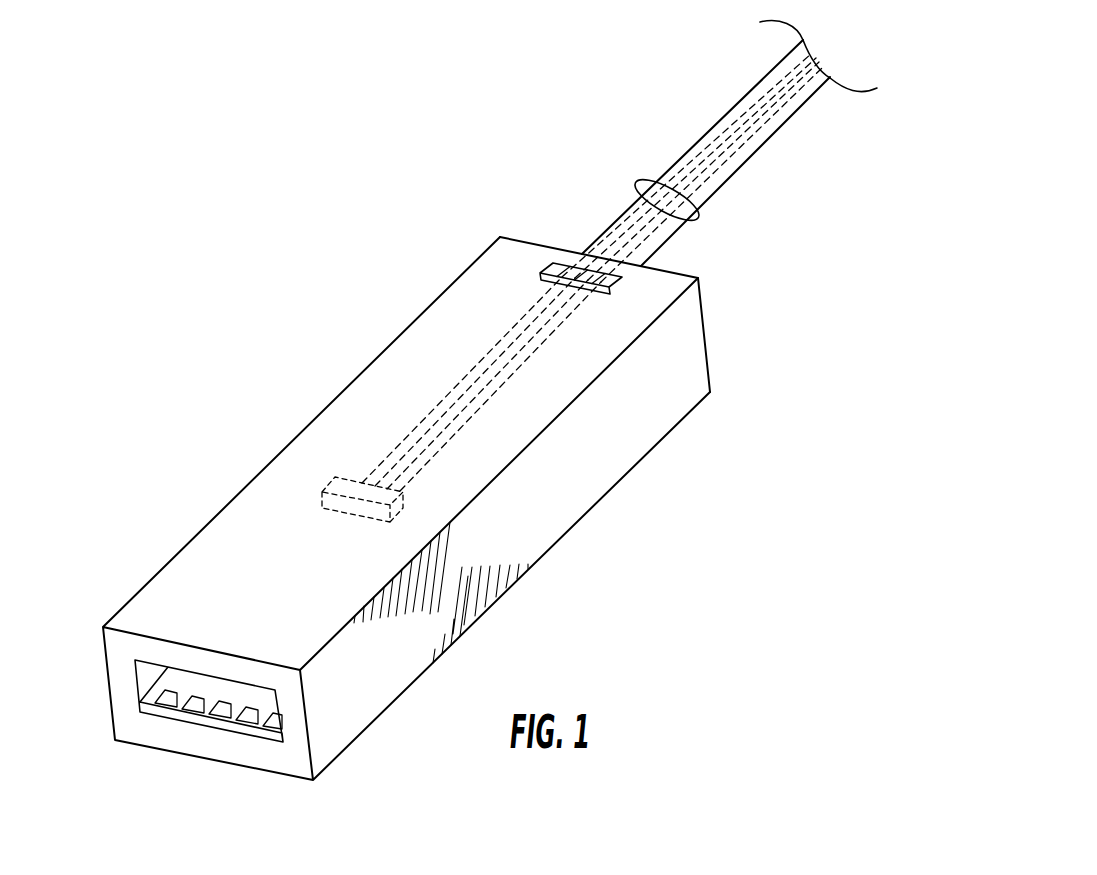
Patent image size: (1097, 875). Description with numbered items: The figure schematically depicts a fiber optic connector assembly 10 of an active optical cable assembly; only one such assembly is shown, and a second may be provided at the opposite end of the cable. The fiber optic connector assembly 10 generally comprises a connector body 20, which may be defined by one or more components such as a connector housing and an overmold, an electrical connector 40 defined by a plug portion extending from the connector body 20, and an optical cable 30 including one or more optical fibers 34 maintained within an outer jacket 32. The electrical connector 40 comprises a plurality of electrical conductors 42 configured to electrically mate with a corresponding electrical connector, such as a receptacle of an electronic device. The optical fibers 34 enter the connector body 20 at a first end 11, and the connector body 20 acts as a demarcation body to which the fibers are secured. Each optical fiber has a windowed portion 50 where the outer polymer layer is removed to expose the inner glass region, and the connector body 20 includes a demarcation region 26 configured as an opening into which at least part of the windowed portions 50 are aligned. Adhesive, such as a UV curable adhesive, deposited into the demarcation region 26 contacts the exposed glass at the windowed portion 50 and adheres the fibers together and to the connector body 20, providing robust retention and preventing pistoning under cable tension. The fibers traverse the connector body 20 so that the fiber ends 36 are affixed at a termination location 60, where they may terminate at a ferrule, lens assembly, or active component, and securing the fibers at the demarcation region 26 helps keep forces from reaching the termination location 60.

The fiber optic connector assembly 10 is at (333, 243).
The first end 11 is at (707, 343).
The connector body 20 is at (360, 375).
The demarcation region 26 is at (545, 271).
The optical cable 30 is at (702, 116).
The outer jacket 32 is at (760, 138).
The optical fibers 34 is at (695, 217).
The fiber ends 36 is at (358, 467).
The electrical connector 40 is at (90, 690).
The electrical conductors 42 is at (173, 713).
The windowed portion 50 is at (622, 292).
The termination location 60 is at (332, 475).